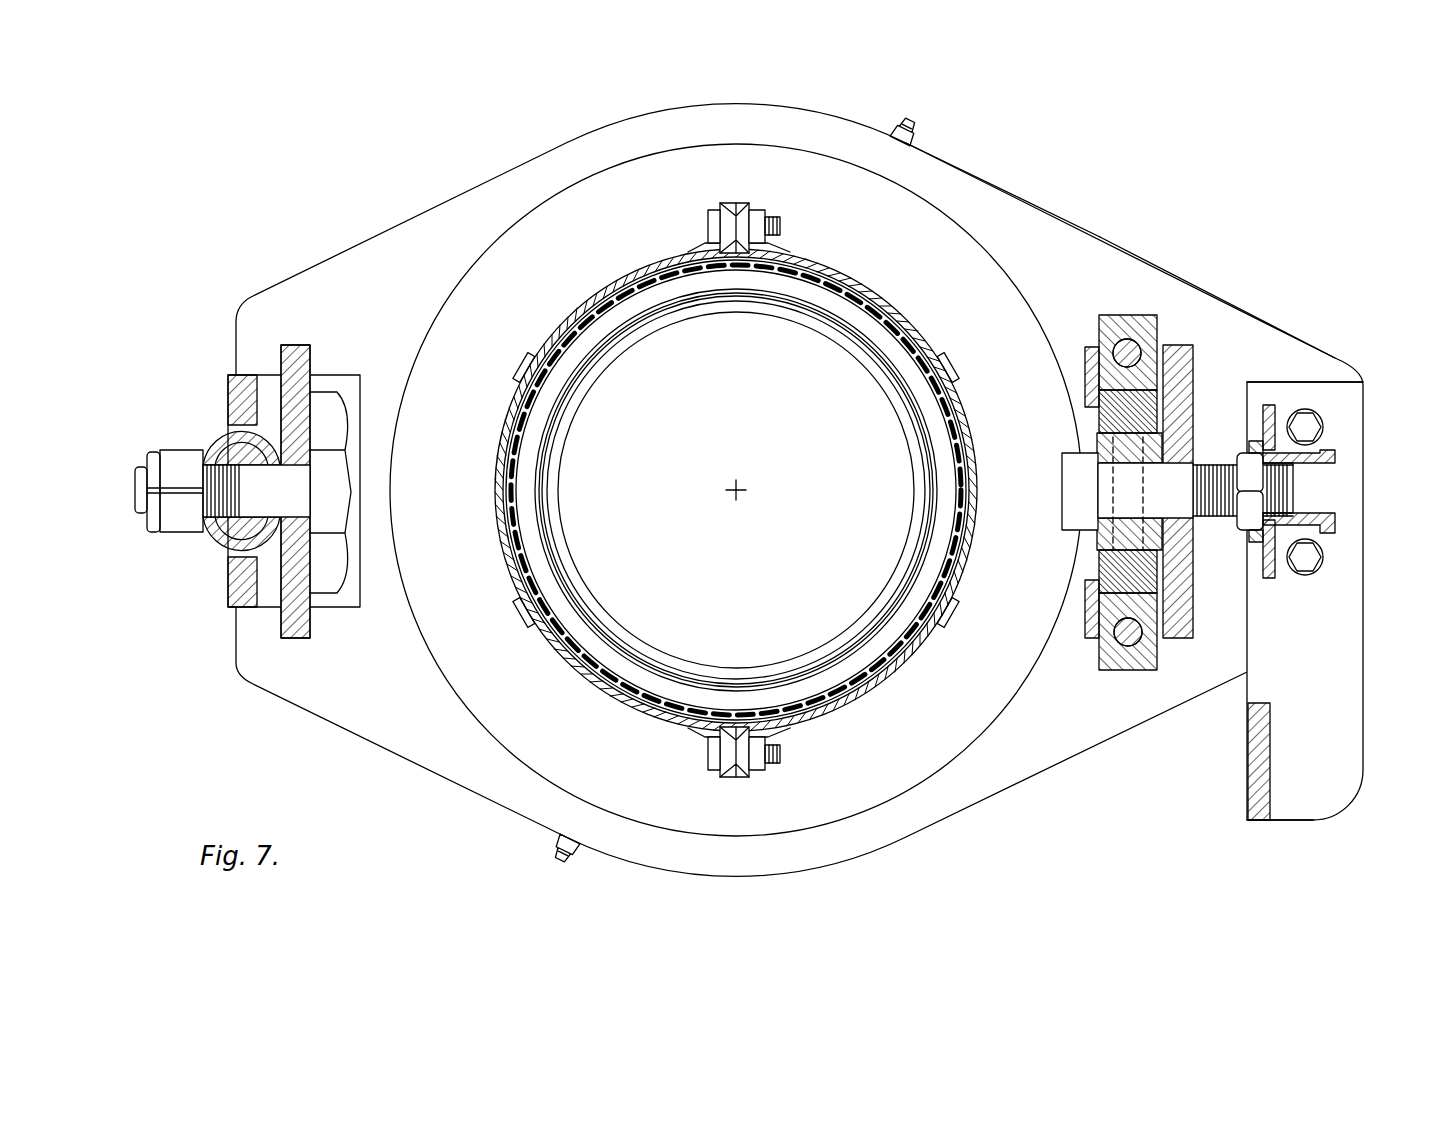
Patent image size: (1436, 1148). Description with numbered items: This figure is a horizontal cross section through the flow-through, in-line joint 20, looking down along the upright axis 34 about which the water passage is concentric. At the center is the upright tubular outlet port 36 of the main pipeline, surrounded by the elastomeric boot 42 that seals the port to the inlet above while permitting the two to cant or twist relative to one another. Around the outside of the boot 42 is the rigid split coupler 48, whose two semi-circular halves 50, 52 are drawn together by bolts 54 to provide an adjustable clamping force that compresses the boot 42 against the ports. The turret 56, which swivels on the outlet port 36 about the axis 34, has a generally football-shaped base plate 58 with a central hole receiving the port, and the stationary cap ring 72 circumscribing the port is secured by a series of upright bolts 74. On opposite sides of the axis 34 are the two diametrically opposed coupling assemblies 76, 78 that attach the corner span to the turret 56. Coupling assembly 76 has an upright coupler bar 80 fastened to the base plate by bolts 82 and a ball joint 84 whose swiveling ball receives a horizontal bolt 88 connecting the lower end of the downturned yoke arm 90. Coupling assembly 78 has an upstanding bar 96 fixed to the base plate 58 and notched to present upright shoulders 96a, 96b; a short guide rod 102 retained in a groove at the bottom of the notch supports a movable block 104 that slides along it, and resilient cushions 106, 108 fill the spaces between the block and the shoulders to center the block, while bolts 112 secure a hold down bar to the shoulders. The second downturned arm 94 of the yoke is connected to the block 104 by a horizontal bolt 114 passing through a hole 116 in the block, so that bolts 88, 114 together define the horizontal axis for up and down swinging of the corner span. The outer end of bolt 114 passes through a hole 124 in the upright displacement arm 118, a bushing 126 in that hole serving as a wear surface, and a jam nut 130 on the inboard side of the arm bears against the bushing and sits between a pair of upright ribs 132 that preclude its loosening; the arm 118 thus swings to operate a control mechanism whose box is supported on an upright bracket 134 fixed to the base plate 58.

The joint 20 is at (832, 482).
The upright axis 34 is at (745, 490).
The outlet port 36 is at (575, 490).
The elastomeric boot 42 is at (618, 304).
The split coupler 48 is at (815, 250).
The semi-circular half 50 is at (918, 334).
The semi-circular half 52 is at (500, 566).
The bolts 54 is at (712, 228).
The turret 56 is at (1102, 222).
The base plate 58 is at (1005, 193).
The cap ring 72 is at (497, 282).
The upright bolts 74 is at (520, 369).
The coupling assembly 76 is at (255, 485).
The coupling assembly 78 is at (1207, 484).
The coupler bar 80 is at (236, 598).
The bolts 82 is at (330, 575).
The ball joint 84 is at (200, 440).
The bolt 88 is at (258, 500).
The yoke arm 90 is at (302, 355).
The downturned arm 94 is at (1180, 596).
The upstanding bar 96 is at (1133, 484).
The upright shoulder 96a is at (1140, 334).
The upright shoulder 96b is at (1130, 665).
The guide rod 102 is at (1144, 493).
The block 104 is at (1150, 447).
The resilient cushion 106 is at (1105, 398).
The resilient cushion 108 is at (1105, 580).
The bolts 112 is at (1120, 347).
The bolt 114 is at (1292, 480).
The hole 116 is at (1115, 510).
The displacement arm 118 is at (1272, 405).
The hole 124 is at (1268, 545).
The bushing 126 is at (1332, 505).
The jam nut 130 is at (1248, 524).
The upright ribs 132 is at (1268, 405).
The upright bracket 134 is at (1345, 740).